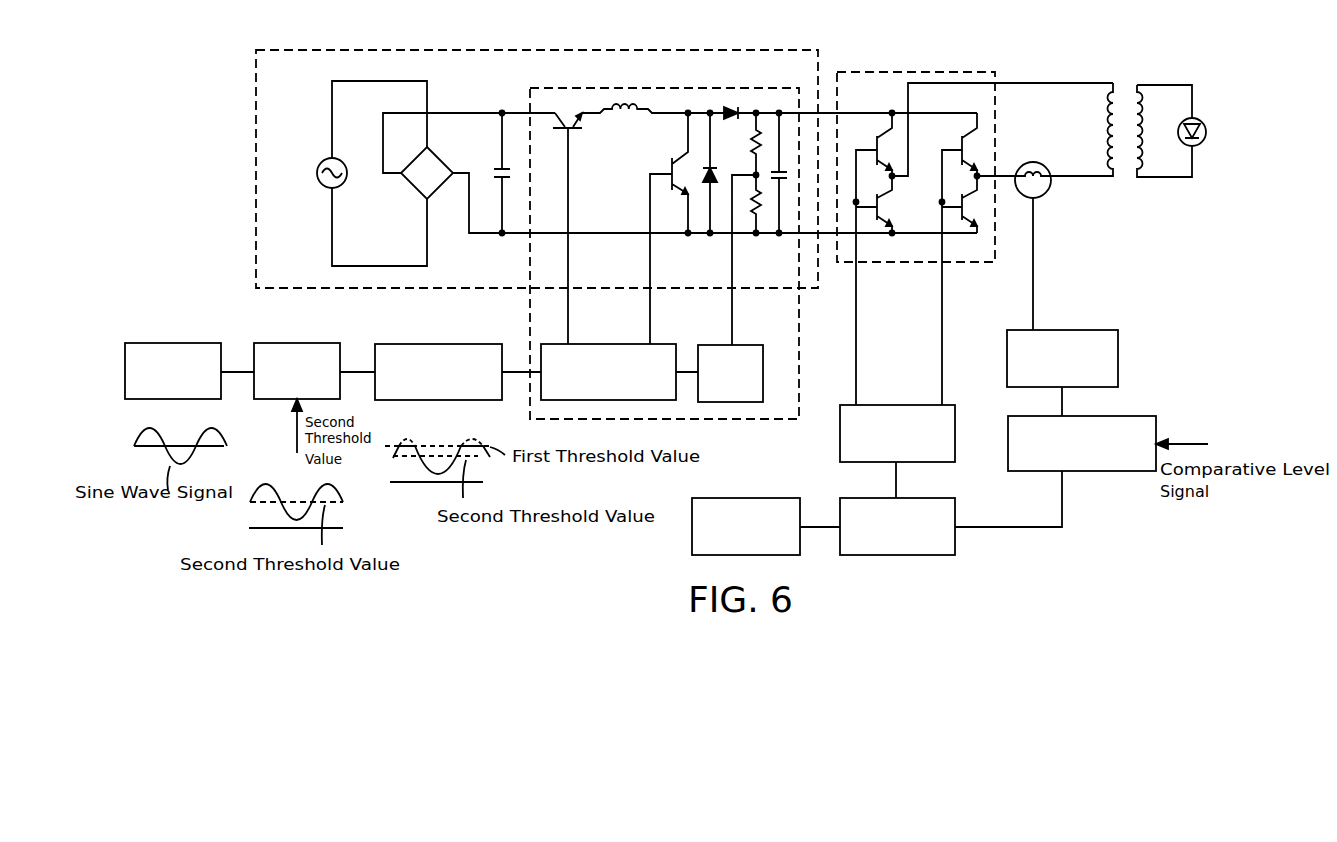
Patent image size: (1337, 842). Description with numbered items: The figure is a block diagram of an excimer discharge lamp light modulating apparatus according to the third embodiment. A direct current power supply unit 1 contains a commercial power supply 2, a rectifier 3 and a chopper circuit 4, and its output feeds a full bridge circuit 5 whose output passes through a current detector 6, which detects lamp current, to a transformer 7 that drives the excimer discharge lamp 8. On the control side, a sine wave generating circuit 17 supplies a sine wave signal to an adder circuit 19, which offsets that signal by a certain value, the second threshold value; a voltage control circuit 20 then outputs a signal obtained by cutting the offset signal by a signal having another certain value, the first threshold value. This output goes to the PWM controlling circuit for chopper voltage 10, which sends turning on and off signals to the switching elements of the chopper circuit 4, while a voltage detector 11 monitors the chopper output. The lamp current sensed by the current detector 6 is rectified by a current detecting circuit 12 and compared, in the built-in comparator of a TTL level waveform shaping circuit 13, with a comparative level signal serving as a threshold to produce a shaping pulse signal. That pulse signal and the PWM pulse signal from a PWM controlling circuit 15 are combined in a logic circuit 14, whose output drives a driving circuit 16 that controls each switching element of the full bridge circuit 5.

The direct current power supply unit 1 is at (616, 155).
The commercial power supply 2 is at (303, 149).
The rectifier 3 is at (394, 183).
The chopper circuit 4 is at (753, 240).
The full bridge circuit 5 is at (975, 225).
The current detector 6 is at (1072, 246).
The transformer 7 is at (1117, 119).
The excimer discharge lamp 8 is at (1229, 168).
The PWM controlling circuit for chopper voltage 10 is at (617, 344).
The voltage detector 11 is at (757, 345).
The current detecting circuit 12 is at (1084, 330).
The TTL level waveform shaping circuit 13 is at (1139, 416).
The logic circuit 14 is at (932, 498).
The PWM controlling circuit 15 is at (756, 498).
The driving circuit 16 is at (907, 405).
The sine wave generating circuit 17 is at (176, 343).
The adder circuit 19 is at (301, 343).
The voltage control circuit 20 is at (444, 344).